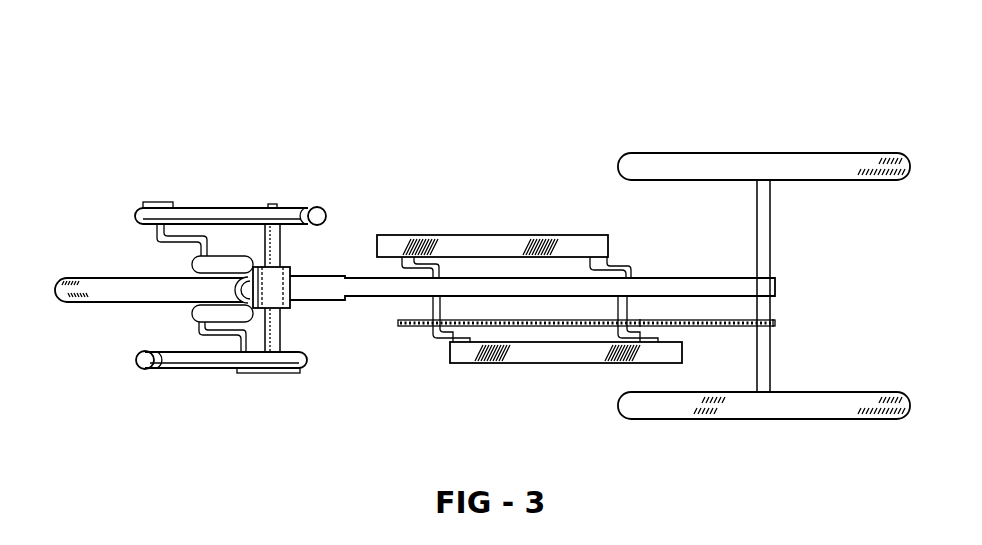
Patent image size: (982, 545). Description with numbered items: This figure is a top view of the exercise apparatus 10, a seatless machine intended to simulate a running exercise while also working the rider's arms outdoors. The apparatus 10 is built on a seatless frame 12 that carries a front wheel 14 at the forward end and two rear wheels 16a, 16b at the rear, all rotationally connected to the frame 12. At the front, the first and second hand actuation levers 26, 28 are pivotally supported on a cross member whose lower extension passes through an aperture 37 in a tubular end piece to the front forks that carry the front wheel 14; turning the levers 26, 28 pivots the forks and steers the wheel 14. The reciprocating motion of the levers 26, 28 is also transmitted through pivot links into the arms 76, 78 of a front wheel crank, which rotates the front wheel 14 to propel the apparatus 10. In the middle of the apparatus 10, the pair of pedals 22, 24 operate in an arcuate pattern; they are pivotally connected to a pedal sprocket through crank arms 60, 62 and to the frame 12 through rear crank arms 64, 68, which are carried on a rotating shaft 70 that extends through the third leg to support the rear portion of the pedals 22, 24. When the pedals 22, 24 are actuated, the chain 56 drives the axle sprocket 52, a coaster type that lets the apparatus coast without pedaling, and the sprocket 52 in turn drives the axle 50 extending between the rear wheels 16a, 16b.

The exercise apparatus 10 is at (606, 59).
The seatless frame 12 is at (767, 285).
The front wheel 14 is at (60, 302).
The rear wheel 16a is at (855, 390).
The rear wheel 16b is at (747, 152).
The pedal 22 is at (573, 354).
The pedal 24 is at (482, 245).
The first hand actuation lever 26 is at (157, 368).
The second hand actuation lever 28 is at (317, 207).
The aperture 37 is at (268, 298).
The axle 50 is at (763, 228).
The axle sprocket 52 is at (773, 324).
The chain 56 is at (728, 328).
The crank arm 60 is at (437, 338).
The crank arm 62 is at (415, 257).
The rear crank arm 64 is at (645, 322).
The rear crank arm 68 is at (615, 257).
The rotating shaft 70 is at (626, 282).
The crank arm 76 is at (199, 335).
The crank arm 78 is at (160, 227).